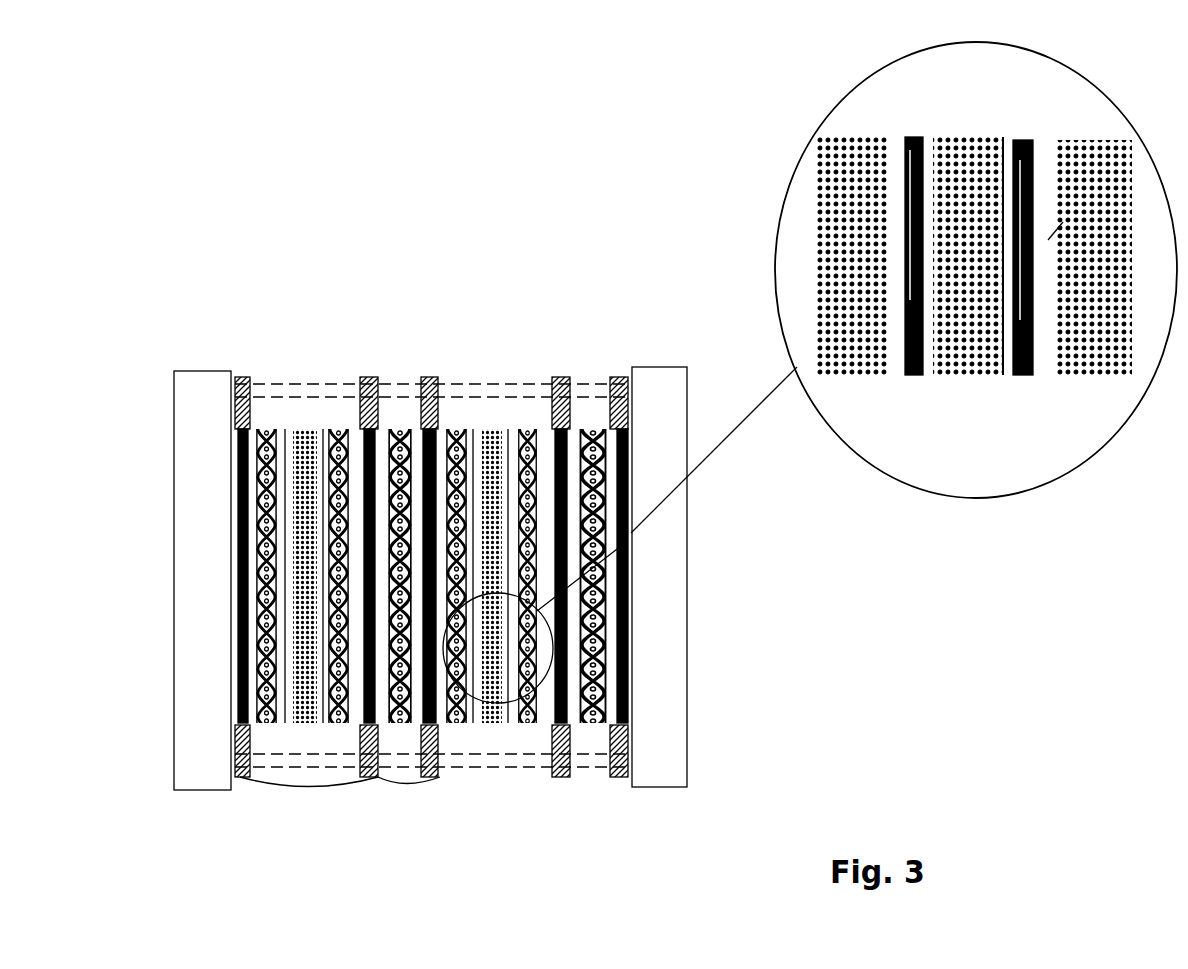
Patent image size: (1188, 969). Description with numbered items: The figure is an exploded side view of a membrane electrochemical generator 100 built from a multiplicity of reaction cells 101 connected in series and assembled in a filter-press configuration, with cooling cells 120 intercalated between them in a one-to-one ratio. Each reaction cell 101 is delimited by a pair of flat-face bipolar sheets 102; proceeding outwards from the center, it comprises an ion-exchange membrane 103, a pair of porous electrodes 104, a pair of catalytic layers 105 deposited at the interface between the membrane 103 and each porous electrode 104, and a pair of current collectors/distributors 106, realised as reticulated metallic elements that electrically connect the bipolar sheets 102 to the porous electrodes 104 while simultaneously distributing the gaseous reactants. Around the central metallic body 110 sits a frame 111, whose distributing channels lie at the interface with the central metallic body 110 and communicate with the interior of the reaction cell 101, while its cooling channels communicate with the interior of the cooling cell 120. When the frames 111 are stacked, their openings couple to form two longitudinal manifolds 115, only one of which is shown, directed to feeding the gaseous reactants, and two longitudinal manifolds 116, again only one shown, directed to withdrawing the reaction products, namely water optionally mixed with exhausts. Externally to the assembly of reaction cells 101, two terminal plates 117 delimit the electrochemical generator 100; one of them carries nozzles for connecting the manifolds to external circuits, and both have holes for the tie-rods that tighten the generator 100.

The electrochemical generator 100 is at (403, 272).
The reaction cell 101 is at (340, 796).
The bipolar sheet 102 is at (367, 377).
The ion-exchange membrane 103 is at (493, 722).
The porous electrode 104 is at (922, 370).
The catalytic layer 105 is at (1018, 368).
The current collector/distributor 106 is at (258, 670).
The central metallic body 110 is at (248, 485).
The frame 111 is at (240, 373).
The longitudinal manifold 115 is at (453, 392).
The longitudinal manifold 116 is at (465, 760).
The terminal plate 117 is at (195, 448).
The cooling cell 120 is at (433, 770).